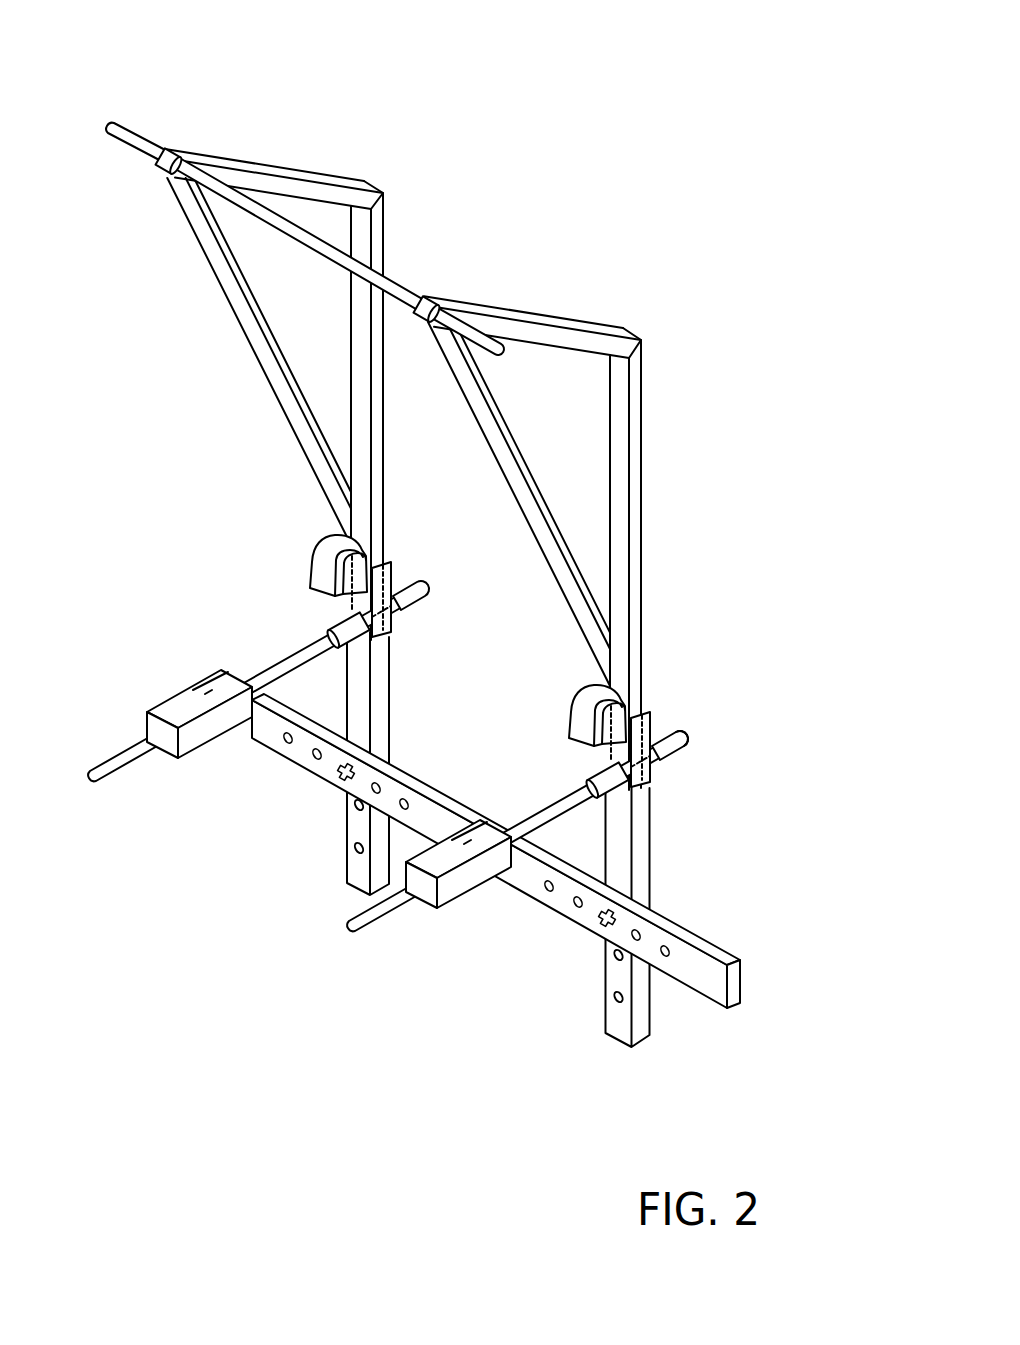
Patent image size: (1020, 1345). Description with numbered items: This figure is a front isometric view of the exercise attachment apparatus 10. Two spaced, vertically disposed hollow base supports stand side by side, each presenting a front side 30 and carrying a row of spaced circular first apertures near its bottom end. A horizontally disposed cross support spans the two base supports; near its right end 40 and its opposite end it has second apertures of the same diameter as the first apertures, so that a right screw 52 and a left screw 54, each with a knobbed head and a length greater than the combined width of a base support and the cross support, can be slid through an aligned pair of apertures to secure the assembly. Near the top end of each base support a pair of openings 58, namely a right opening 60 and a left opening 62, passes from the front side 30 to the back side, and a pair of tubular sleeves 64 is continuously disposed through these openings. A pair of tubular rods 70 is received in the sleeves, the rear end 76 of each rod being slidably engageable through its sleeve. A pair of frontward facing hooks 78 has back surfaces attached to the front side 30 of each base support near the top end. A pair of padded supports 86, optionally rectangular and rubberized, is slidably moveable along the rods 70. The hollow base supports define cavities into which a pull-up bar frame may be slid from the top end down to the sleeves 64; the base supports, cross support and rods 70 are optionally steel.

The exercise attachment apparatus 10 is at (453, 523).
The front side 30 is at (614, 862).
The right end 40 is at (736, 985).
The right screw 52 is at (598, 928).
The left screw 54 is at (334, 779).
The pair of openings 58 is at (398, 629).
The right opening 60 is at (650, 732).
The left opening 62 is at (393, 578).
The pair of tubular sleeves 64 is at (422, 601).
The pair of tubular rods 70 is at (267, 662).
The rear end 76 is at (688, 735).
The pair of frontward facing hooks 78 is at (330, 552).
The pair of padded supports 86 is at (192, 748).